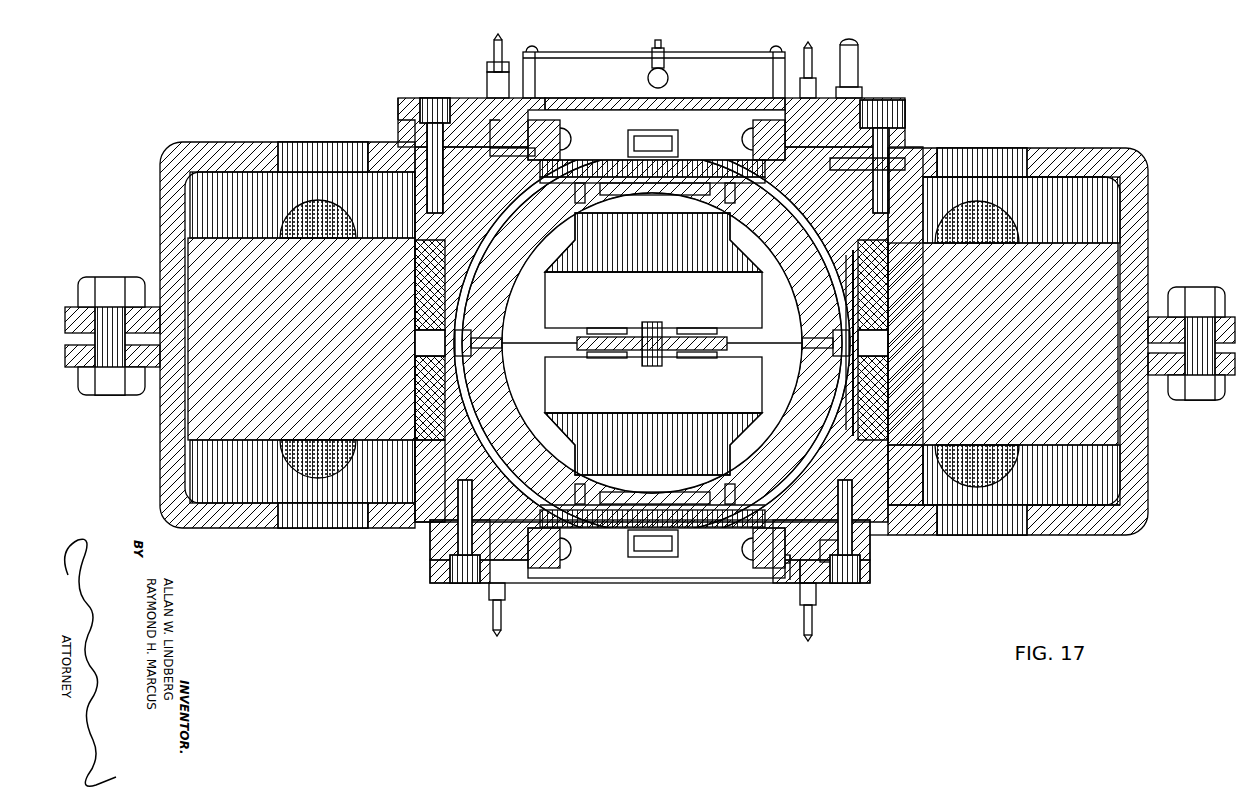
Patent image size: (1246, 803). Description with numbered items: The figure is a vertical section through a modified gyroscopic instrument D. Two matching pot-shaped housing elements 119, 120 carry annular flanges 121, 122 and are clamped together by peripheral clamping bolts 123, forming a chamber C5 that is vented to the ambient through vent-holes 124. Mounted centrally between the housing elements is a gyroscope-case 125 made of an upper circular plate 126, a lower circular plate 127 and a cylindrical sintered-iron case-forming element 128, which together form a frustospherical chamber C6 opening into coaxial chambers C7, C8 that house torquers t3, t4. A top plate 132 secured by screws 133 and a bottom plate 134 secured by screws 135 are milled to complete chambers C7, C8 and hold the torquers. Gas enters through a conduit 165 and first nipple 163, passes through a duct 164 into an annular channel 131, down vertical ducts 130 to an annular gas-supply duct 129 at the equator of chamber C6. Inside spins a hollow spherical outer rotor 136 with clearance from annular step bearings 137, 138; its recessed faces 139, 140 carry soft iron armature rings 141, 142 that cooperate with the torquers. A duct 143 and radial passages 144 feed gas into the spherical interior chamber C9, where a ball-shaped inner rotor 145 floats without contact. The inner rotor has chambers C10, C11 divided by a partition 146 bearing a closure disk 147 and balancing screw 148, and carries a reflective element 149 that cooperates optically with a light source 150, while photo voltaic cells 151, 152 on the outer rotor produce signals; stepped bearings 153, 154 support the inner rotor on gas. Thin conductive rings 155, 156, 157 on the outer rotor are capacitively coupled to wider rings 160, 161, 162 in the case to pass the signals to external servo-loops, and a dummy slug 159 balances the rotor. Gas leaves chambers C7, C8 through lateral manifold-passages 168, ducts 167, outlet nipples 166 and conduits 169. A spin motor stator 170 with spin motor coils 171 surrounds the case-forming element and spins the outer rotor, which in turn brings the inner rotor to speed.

The pot-shaped housing element 119 is at (1142, 226).
The pot-shaped housing element 120 is at (1145, 525).
The annular flange 121 is at (72, 307).
The annular flange 122 is at (90, 396).
The peripheral clamping bolt 123 is at (122, 290).
The vent-hole 124 is at (305, 150).
The gyroscope-case 125 is at (928, 190).
The upper circular plate 126 is at (922, 165).
The lower circular plate 127 is at (890, 537).
The case-forming element 128 is at (893, 455).
The annular gas-supply duct 129 is at (358, 470).
The vertical duct 130 is at (398, 118).
The annular channel 131 is at (470, 135).
The top plate 132 is at (402, 97).
The screw 133 is at (433, 98).
The bottom plate 134 is at (470, 585).
The screw 135 is at (455, 555).
The outer rotor 136 is at (862, 528).
The annular step bearing 137 is at (872, 162).
The annular step bearing 138 is at (438, 530).
The top recessed face 139 is at (588, 172).
The bottom recessed face 140 is at (580, 530).
The soft iron armature ring 141 is at (570, 172).
The soft iron armature ring 142 is at (578, 522).
The annular gas-supply duct 143 is at (430, 360).
The radial passage 144 is at (442, 395).
The inner rotor 145 is at (618, 480).
The partition 146 is at (752, 322).
The transverse closure disk 147 is at (622, 336).
The balancing screw 148 is at (660, 330).
The reflective element 149 is at (706, 332).
The light source 150 is at (664, 70).
The photo voltaic cell 151 is at (612, 160).
The photo voltaic cell 152 is at (700, 185).
The annular stepped bearing 153 is at (712, 234).
The annular stepped bearing 154 is at (735, 440).
The annular ring 155 is at (872, 258).
The annular ring 156 is at (872, 292).
The annular ring 157 is at (872, 316).
The dummy slug 159 is at (700, 545).
The annular ring 160 is at (872, 278).
The annular ring 161 is at (875, 302).
The annular ring 162 is at (870, 334).
The first nipple 163 is at (848, 115).
The duct 164 is at (880, 110).
The conduit 165 is at (855, 52).
The outlet nipple 166 is at (814, 78).
The duct 167 is at (496, 68).
The lateral manifold-passage 168 is at (530, 130).
The conduit 169 is at (504, 38).
The spin motor stator 170 is at (1100, 435).
The spin motor coil 171 is at (300, 205).
The chamber C5 is at (165, 180).
The frustospherical chamber C6 is at (425, 522).
The coaxial chamber C7 is at (680, 120).
The coaxial chamber C8 is at (695, 611).
The spherical interior chamber C9 is at (385, 150).
The internal chamber C10 is at (650, 291).
The internal chamber C11 is at (666, 396).
The torquer t3 is at (745, 125).
The torquer t4 is at (726, 582).
The gyroscopic instrument D is at (1136, 144).